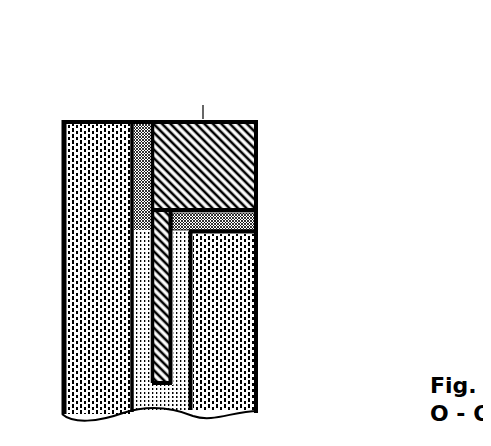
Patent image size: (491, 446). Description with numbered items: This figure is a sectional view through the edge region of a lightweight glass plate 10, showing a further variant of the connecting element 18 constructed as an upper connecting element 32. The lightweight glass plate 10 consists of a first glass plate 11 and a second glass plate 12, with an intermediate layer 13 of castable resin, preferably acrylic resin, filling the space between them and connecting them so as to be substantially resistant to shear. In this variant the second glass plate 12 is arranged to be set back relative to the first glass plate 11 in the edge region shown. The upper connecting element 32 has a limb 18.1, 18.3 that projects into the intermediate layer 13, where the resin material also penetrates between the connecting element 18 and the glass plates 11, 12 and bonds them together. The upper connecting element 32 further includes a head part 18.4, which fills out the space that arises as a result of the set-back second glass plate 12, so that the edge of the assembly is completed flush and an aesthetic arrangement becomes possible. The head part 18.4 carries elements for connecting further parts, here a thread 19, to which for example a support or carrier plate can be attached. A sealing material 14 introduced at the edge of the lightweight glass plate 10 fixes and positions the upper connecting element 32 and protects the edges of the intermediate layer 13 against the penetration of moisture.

The lightweight glass plate 10 is at (102, 103).
The first glass plate 11 is at (83, 378).
The second glass plate 12 is at (222, 378).
The intermediate layer 13 is at (172, 285).
The sealing material 14 is at (248, 237).
The connecting element 18 is at (250, 208).
The upper connecting element 32 is at (214, 221).
The limb 18.1 is at (165, 313).
The limb 18.3 is at (142, 268).
The head part 18.4 is at (168, 151).
The thread 19 is at (195, 102).